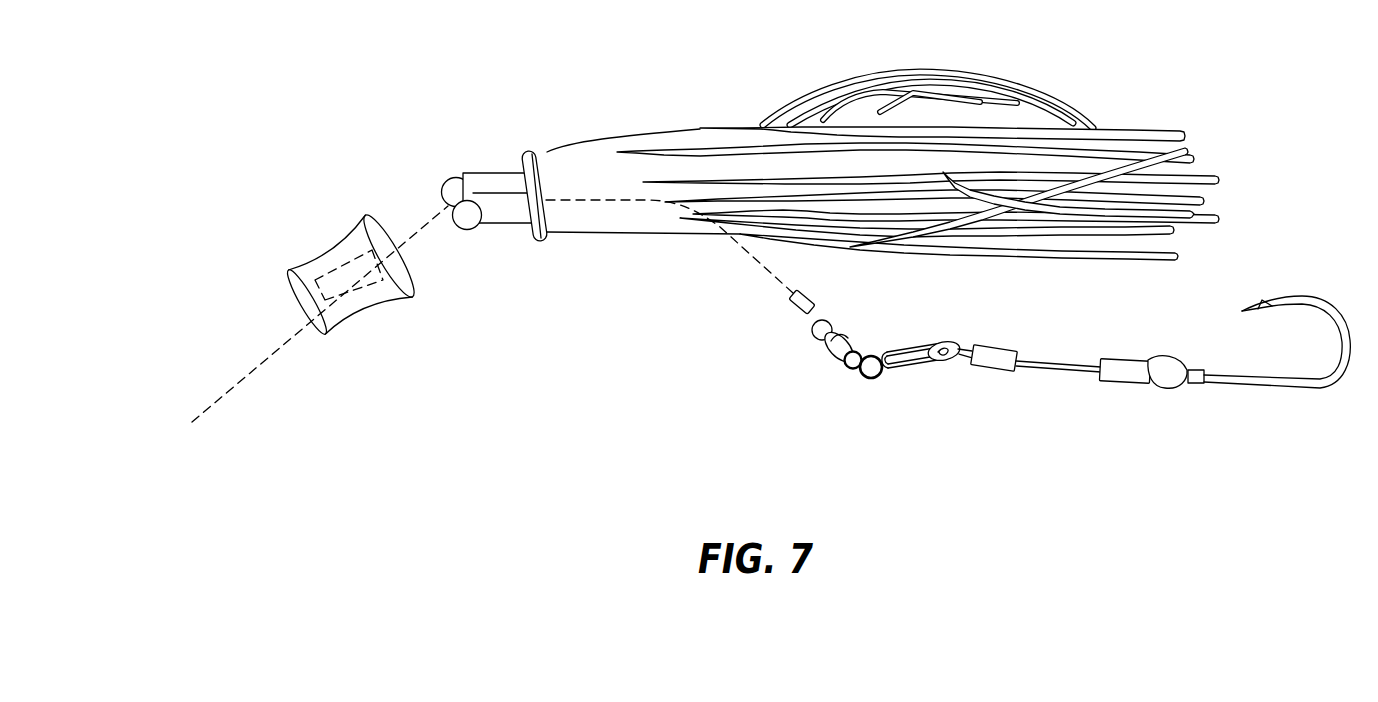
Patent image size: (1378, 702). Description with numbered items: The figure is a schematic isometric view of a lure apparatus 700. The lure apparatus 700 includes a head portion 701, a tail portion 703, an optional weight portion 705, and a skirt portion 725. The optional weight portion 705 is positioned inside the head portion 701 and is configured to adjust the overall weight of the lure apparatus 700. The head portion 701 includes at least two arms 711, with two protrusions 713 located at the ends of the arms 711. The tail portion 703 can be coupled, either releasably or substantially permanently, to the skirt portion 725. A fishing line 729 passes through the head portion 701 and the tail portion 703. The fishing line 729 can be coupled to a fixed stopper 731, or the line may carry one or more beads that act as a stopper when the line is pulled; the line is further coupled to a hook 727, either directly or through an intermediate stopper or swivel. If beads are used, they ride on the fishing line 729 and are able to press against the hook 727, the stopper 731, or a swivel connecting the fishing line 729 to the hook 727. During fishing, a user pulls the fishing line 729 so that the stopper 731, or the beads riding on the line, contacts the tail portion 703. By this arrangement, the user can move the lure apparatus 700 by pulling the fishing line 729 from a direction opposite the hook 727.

The lure apparatus 700 is at (356, 143).
The head portion 701 is at (398, 322).
The tail portion 703 is at (511, 126).
The weight portion 705 is at (370, 297).
The arms 711 is at (518, 226).
The protrusions 713 is at (468, 223).
The skirt portion 725 is at (710, 133).
The hook 727 is at (1247, 385).
The fishing line 729 is at (255, 360).
The stopper 731 is at (795, 306).